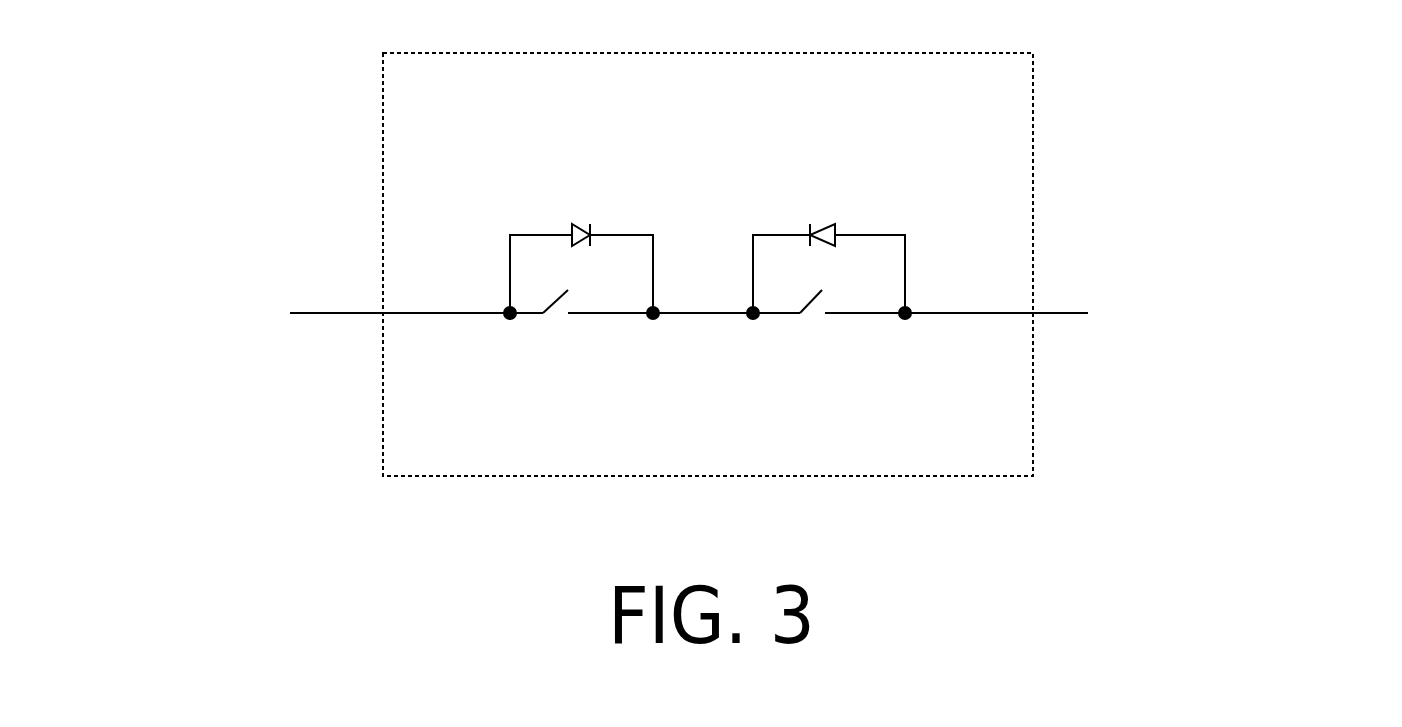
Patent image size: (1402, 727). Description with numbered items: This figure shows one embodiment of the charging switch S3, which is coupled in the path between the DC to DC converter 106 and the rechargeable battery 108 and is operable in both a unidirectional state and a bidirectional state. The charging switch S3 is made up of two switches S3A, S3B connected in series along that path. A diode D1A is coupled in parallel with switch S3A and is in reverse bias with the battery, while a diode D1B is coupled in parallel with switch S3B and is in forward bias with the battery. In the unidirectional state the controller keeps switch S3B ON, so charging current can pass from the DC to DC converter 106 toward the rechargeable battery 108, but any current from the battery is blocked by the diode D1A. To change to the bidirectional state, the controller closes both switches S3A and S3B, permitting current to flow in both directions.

The charging switch S3 is at (1033, 195).
The switch S3A is at (581, 325).
The switch S3B is at (829, 325).
The diode D1A is at (581, 248).
The diode D1B is at (829, 248).
The DC to DC converter 106 is at (276, 275).
The rechargeable battery 108 is at (1147, 282).